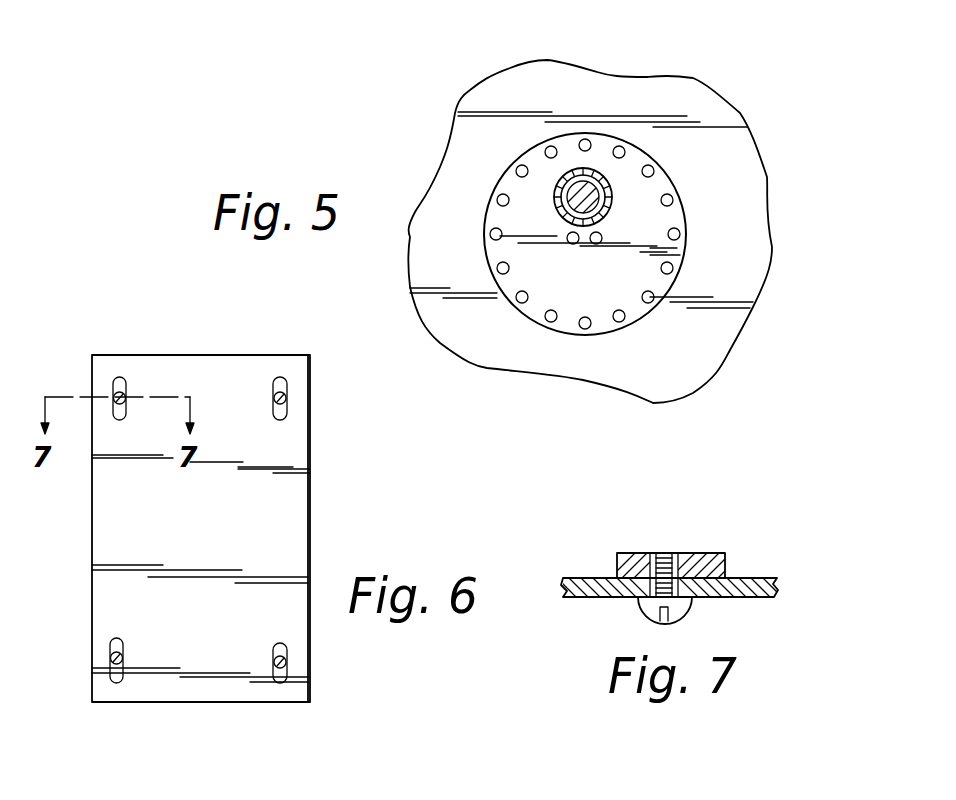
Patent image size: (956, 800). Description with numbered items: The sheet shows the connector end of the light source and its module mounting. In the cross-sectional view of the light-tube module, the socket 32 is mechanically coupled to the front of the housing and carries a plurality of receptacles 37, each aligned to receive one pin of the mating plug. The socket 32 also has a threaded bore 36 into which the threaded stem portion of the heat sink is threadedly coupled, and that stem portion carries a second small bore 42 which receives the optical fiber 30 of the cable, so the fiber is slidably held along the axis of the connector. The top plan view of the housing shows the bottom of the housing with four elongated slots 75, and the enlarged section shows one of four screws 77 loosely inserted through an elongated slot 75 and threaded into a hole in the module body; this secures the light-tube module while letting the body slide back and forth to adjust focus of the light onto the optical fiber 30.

In FIG. 5, the optical fiber 30 is at (613, 187).
In FIG. 5, the socket 32 is at (553, 290).
In FIG. 5, the threaded bore 36 is at (556, 180).
In FIG. 5, the receptacles 37 is at (681, 234).
In FIG. 5, the second small bore 42 is at (597, 170).
In FIG. 6, the elongated slots 75 is at (118, 377).
In FIG. 7, the screws 77 is at (690, 598).